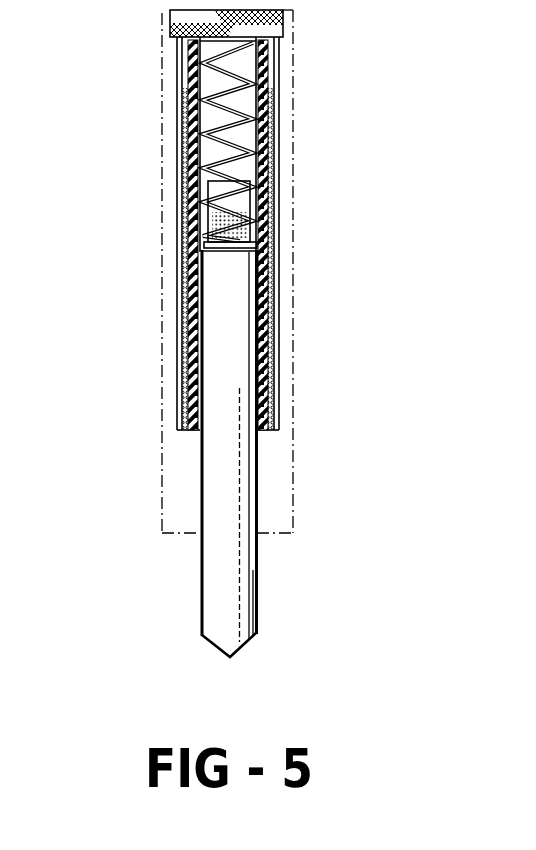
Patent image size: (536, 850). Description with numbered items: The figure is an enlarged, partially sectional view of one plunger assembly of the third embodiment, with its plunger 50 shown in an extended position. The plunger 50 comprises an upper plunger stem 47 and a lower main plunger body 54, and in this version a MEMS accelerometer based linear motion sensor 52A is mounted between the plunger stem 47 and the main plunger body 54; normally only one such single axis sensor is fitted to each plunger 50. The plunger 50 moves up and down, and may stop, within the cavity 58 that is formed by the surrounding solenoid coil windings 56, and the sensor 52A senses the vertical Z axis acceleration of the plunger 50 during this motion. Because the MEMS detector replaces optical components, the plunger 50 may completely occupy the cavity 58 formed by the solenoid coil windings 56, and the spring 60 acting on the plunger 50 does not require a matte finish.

The plunger stem 47 is at (204, 181).
The plunger 50 is at (190, 451).
The MEMS accelerometer based linear motion sensor 52A is at (207, 198).
The main plunger body 54 is at (229, 505).
The solenoid coil windings 56 is at (257, 192).
The cavity 58 is at (252, 352).
The spring 60 is at (232, 48).